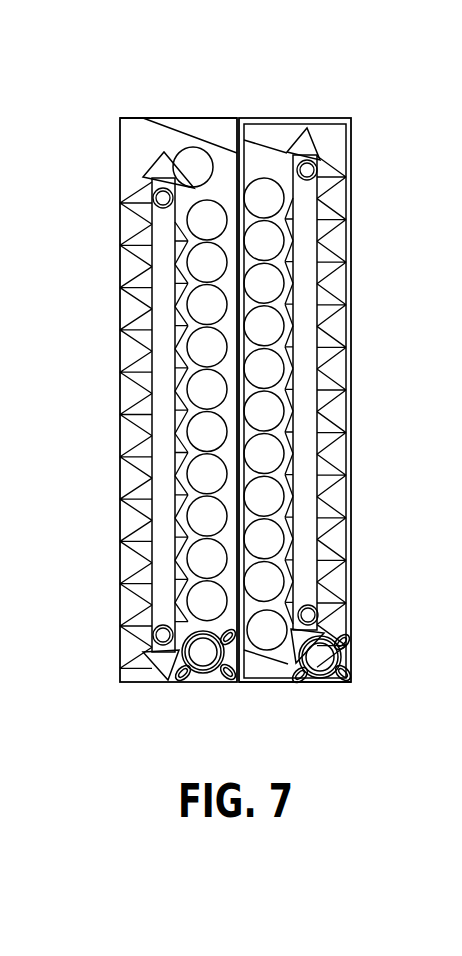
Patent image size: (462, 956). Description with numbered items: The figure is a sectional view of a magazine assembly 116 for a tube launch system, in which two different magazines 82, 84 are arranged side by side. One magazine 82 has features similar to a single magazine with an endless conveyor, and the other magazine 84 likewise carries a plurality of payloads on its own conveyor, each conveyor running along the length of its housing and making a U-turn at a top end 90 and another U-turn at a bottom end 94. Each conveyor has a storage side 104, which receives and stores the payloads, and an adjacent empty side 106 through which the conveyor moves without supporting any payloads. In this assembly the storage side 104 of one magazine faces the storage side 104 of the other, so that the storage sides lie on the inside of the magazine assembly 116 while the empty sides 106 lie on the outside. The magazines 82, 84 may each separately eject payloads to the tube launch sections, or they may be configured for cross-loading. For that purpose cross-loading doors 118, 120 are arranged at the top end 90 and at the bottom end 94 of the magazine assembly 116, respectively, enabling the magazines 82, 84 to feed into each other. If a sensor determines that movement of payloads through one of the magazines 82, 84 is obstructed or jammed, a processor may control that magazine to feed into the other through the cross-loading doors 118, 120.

The magazine 82 is at (106, 195).
The magazine 84 is at (362, 203).
The top end 90 is at (185, 118).
The bottom end 94 is at (275, 682).
The storage side 104 is at (202, 302).
The empty side 106 is at (125, 348).
The magazine assembly 116 is at (100, 124).
The cross-loading door 118 is at (214, 126).
The cross-loading door 120 is at (259, 663).